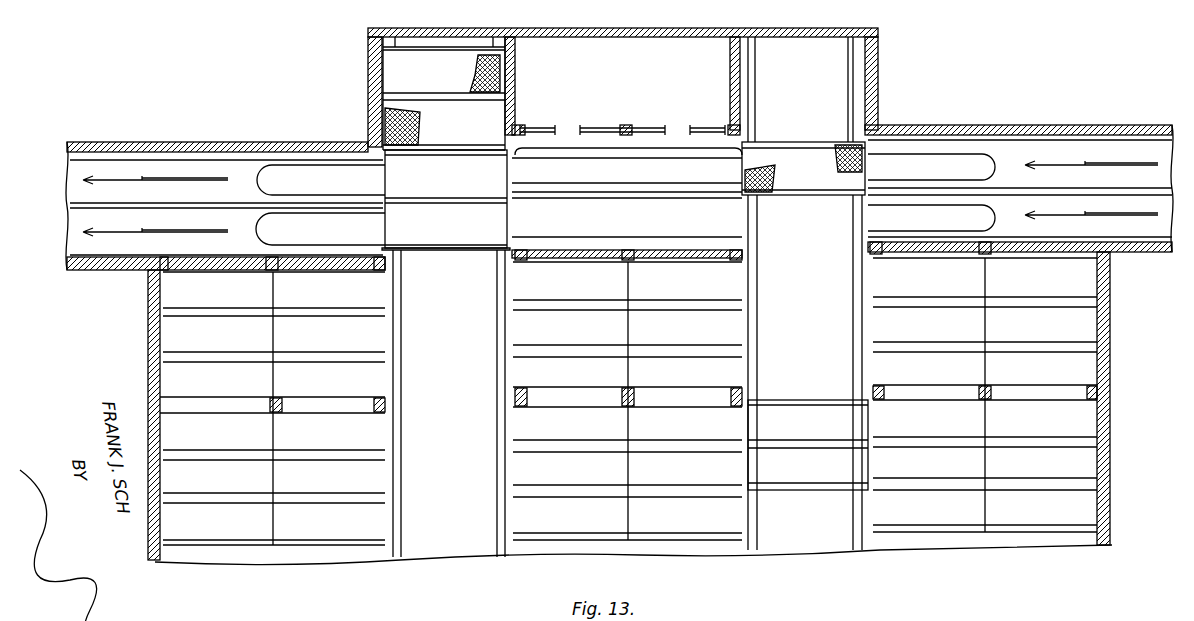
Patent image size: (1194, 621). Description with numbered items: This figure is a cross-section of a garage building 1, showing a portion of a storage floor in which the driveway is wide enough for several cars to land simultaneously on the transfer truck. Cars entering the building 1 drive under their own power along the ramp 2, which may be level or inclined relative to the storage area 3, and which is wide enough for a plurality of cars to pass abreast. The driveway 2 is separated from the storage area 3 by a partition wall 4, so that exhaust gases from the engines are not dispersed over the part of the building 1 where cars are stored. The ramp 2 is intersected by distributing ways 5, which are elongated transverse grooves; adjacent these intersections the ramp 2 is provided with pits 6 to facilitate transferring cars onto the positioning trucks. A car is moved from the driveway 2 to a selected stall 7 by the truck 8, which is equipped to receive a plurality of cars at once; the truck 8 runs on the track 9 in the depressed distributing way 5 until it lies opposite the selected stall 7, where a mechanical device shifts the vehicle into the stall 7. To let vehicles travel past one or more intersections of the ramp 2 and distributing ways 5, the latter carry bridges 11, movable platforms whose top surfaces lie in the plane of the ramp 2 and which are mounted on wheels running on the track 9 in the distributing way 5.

The building 1 is at (147, 280).
The ramp 2 is at (237, 172).
The storage area 3 is at (628, 400).
The partition wall 4 is at (247, 258).
The distributing way 5 is at (627, 376).
The pit 6 is at (625, 199).
The stall 7 is at (337, 298).
The truck 8 is at (445, 252).
The track 9 is at (405, 470).
The bridge 11 is at (490, 112).